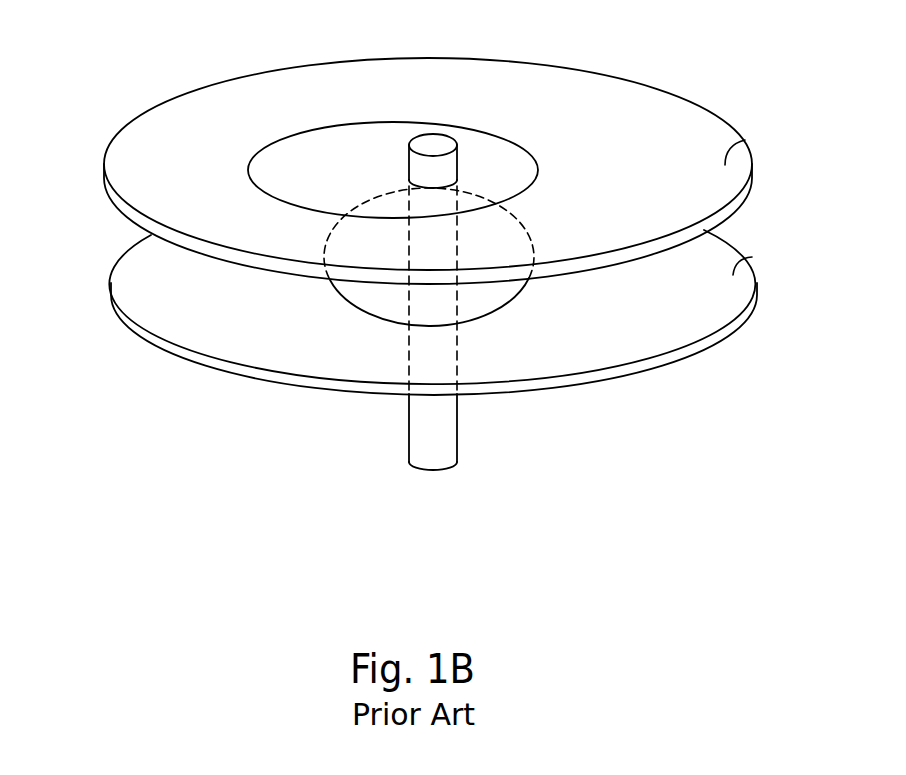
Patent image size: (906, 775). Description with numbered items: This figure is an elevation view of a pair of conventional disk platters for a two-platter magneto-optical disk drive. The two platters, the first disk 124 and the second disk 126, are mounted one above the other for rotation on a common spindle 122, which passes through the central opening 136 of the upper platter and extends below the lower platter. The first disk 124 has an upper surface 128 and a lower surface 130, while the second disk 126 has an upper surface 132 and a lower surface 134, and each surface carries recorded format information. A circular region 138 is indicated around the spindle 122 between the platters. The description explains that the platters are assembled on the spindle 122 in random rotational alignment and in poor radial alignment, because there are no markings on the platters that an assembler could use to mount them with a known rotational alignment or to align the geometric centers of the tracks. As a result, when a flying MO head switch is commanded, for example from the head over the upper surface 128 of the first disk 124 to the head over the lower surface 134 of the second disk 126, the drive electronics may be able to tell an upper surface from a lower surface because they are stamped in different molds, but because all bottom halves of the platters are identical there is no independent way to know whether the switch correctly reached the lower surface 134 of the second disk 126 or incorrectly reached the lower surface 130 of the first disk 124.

The spindle 122 is at (410, 447).
The disk 1 124 is at (430, 171).
The disk 2 126 is at (438, 312).
The upper surface of disk 1 128 is at (746, 140).
The lower surface of disk 1 130 is at (753, 188).
The upper surface of second disk 132 is at (752, 258).
The lower surface of disk 2 134 is at (745, 316).
The central opening of first disk 136 is at (266, 153).
The circular clamping region 138 is at (517, 285).